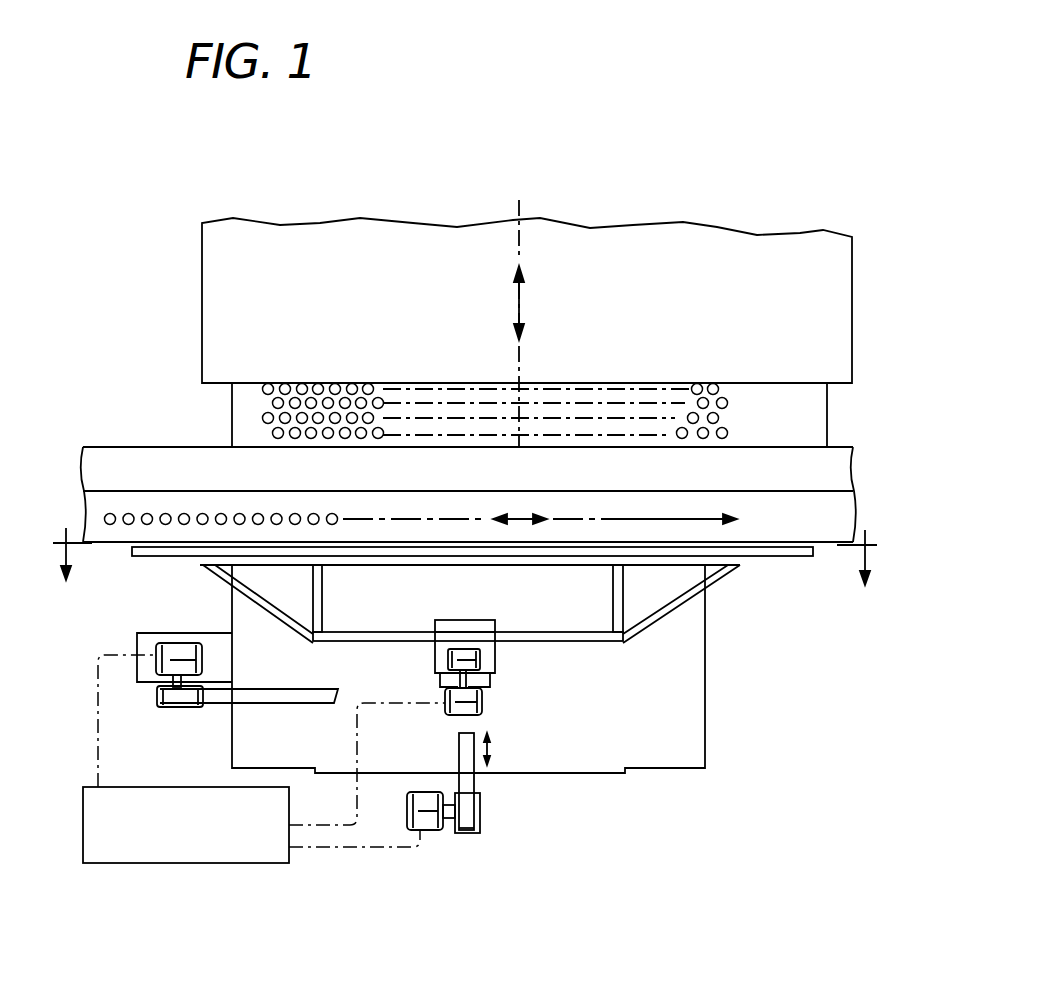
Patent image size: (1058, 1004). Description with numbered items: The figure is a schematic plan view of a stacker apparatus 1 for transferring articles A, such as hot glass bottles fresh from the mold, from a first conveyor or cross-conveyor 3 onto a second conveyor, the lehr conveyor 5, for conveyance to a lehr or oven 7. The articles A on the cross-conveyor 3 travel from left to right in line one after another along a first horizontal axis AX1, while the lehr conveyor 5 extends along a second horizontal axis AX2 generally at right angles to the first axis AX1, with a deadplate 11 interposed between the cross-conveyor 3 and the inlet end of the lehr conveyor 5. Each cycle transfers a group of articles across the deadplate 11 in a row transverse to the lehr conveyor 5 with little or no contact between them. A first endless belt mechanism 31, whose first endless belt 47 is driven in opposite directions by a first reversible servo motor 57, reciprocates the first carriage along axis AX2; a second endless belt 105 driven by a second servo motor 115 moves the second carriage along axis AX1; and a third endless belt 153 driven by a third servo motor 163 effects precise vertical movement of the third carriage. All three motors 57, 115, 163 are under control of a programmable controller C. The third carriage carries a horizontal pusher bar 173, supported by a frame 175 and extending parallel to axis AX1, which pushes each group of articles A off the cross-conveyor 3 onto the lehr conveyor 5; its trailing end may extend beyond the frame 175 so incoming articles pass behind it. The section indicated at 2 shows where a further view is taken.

The apparatus 1 is at (655, 815).
The section line 2- 2 is at (465, 549).
The first conveyor 3 is at (107, 544).
The second conveyor 5 is at (232, 408).
The lehr 7 is at (852, 306).
The deadplate 11 is at (847, 482).
The first endless belt mechanism 31 is at (478, 785).
The first endless belt 47 is at (459, 748).
The first reversible electric servo motor 57 is at (433, 832).
The second endless belt 105 is at (218, 707).
The second reversible electric servo motor 115 is at (168, 643).
The third endless belt 153 is at (500, 659).
The third reversible electric servo motor 163 is at (482, 702).
The pusher bar 173 is at (162, 557).
The frame 175 is at (352, 646).
The articles A is at (361, 439).
The first axis AX1 is at (505, 518).
The second axis AX2 is at (519, 303).
The programmable controller C is at (180, 867).